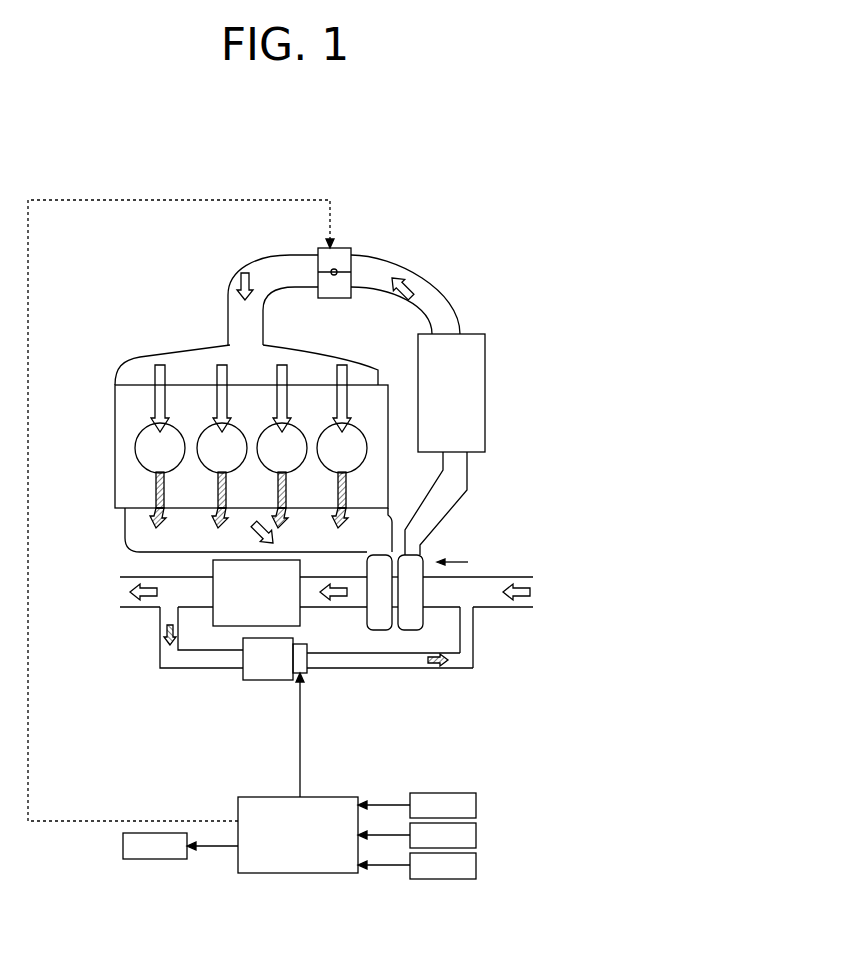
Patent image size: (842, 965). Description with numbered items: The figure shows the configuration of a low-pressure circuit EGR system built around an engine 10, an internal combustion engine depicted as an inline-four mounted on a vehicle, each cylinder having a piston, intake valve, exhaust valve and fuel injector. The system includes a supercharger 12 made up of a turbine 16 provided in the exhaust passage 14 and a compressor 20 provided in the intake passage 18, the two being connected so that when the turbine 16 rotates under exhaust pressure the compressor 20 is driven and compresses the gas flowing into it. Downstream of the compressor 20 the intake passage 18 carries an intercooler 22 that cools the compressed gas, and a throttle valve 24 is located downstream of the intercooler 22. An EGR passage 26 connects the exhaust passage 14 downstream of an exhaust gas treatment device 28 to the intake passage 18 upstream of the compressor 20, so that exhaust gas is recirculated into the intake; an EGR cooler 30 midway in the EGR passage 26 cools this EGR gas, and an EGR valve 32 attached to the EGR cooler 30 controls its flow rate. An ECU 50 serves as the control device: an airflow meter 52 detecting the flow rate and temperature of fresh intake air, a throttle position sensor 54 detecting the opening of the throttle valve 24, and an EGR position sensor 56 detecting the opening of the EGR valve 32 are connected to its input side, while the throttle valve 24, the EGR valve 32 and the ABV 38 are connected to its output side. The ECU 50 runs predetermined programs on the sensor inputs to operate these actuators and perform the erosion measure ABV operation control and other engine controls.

The engine 10 is at (115, 418).
The supercharger 12 is at (395, 663).
The exhaust passage 14 is at (128, 610).
The turbine 16 is at (373, 633).
The intake passage 18 is at (400, 264).
The compressor 20 is at (412, 633).
The intercooler 22 is at (486, 347).
The throttle valve 24 is at (340, 248).
The EGR passage 26 is at (198, 670).
The exhaust gas treatment device 28 is at (227, 627).
The EGR cooler 30 is at (265, 681).
The EGR valve 32 is at (315, 675).
The ABV 38 is at (150, 860).
The ECU 50 is at (302, 874).
The airflow meter 52 is at (478, 800).
The throttle position sensor 54 is at (478, 830).
The EGR position sensor 56 is at (478, 860).